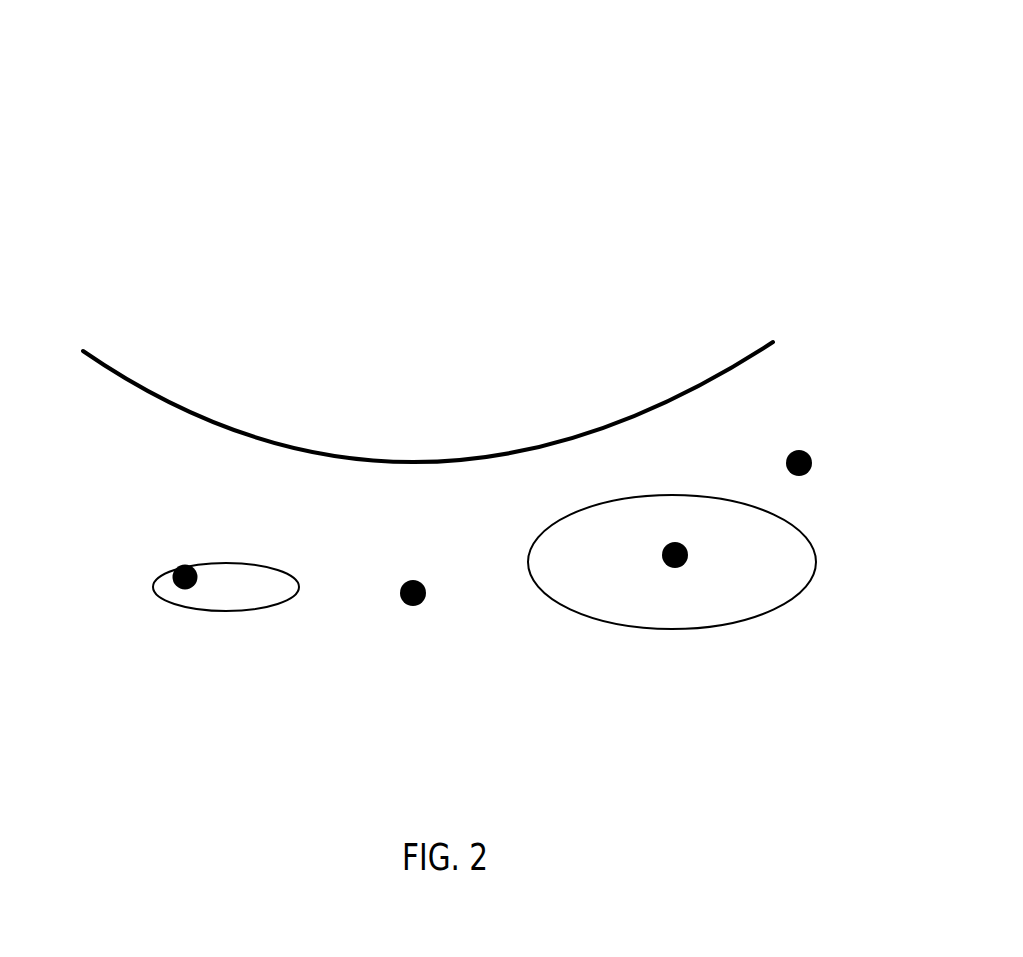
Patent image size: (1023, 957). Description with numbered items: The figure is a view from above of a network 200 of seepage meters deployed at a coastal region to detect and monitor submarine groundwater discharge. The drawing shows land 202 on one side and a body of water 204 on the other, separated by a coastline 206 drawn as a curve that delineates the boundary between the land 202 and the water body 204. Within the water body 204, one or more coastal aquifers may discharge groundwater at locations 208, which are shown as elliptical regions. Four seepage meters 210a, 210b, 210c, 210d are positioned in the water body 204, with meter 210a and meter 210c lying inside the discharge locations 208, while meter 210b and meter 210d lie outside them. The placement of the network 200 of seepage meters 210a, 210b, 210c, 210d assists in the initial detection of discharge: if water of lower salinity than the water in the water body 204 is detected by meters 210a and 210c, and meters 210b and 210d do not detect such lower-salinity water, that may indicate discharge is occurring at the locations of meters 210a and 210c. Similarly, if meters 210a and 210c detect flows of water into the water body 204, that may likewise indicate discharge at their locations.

The network of seepage meters 200 is at (897, 125).
The land 202 is at (173, 303).
The body of water 204 is at (163, 705).
The coastline 206 is at (305, 443).
The groundwater discharge locations 208 is at (293, 562).
The seepage meter 210a is at (173, 558).
The seepage meter 210b is at (407, 612).
The seepage meter 210c is at (693, 577).
The seepage meter 210d is at (813, 442).